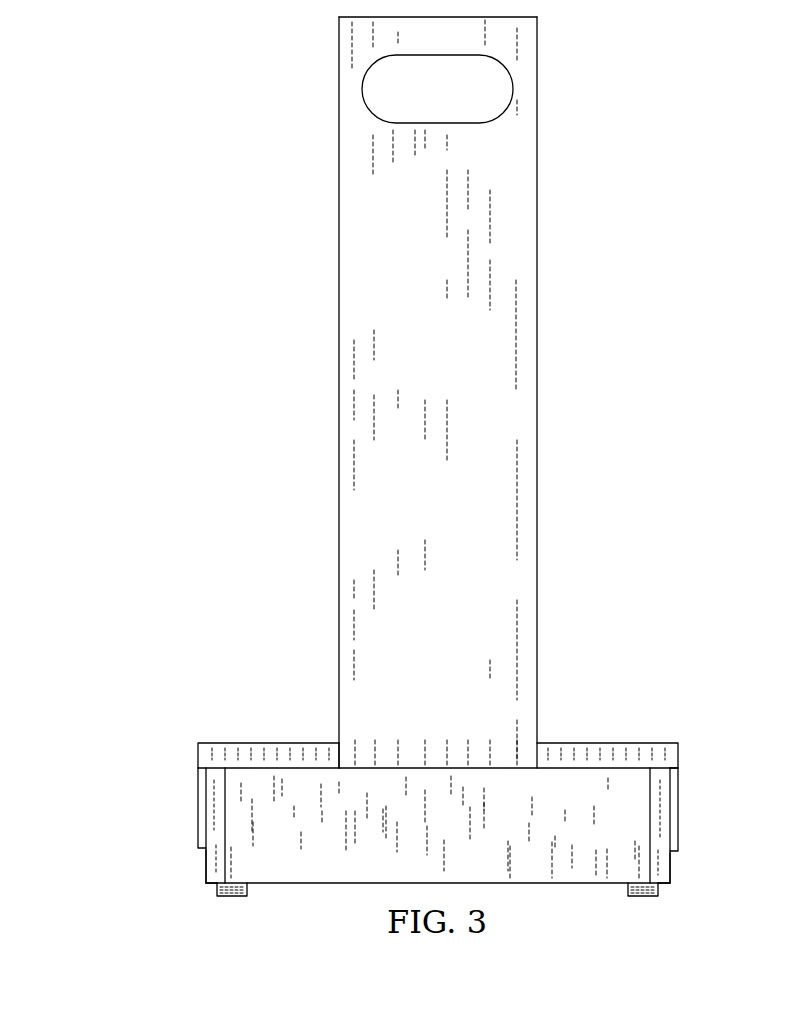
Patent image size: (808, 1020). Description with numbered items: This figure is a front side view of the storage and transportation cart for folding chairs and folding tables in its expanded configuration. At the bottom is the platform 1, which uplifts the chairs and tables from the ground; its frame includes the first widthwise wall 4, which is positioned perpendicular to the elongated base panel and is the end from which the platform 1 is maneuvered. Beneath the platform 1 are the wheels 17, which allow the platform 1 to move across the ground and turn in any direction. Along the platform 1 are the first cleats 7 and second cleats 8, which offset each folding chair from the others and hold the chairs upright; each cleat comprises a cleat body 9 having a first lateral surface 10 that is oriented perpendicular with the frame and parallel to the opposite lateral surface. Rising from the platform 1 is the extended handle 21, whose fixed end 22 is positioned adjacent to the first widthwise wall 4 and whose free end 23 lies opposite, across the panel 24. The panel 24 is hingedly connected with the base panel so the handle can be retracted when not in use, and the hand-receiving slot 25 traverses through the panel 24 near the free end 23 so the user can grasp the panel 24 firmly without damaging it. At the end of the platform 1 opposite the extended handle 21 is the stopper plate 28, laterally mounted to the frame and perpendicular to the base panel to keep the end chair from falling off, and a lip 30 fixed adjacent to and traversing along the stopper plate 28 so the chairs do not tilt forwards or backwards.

The platform 1 is at (575, 765).
The first widthwise wall 4 is at (615, 773).
The first cleats 7 is at (203, 890).
The second cleats 8 is at (672, 888).
The cleat body 9 is at (205, 868).
The first lateral surface 10 is at (210, 783).
The wheels 17 is at (247, 895).
The extended handle 21 is at (545, 230).
The fixed end 22 is at (332, 763).
The free end 23 is at (328, 24).
The panel 24 is at (348, 365).
The hand-receiving slot 25 is at (360, 87).
The stopper plate 28 is at (673, 777).
The lip 30 is at (675, 755).